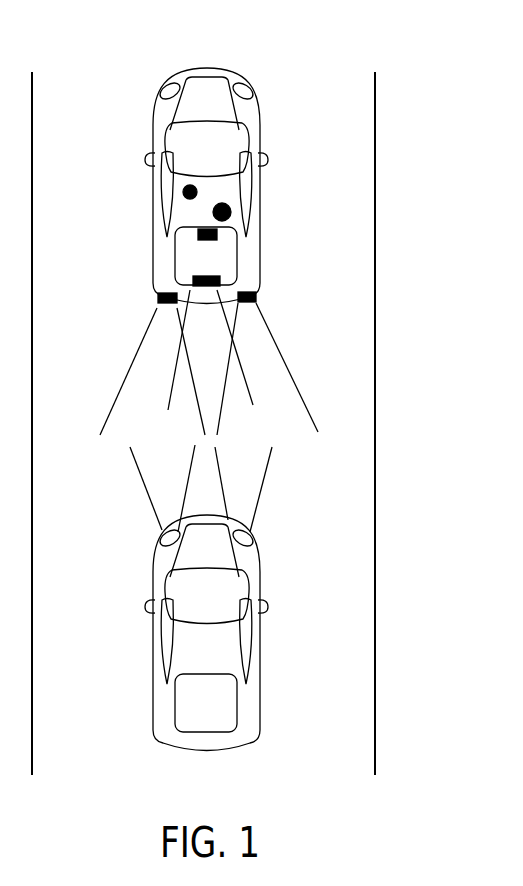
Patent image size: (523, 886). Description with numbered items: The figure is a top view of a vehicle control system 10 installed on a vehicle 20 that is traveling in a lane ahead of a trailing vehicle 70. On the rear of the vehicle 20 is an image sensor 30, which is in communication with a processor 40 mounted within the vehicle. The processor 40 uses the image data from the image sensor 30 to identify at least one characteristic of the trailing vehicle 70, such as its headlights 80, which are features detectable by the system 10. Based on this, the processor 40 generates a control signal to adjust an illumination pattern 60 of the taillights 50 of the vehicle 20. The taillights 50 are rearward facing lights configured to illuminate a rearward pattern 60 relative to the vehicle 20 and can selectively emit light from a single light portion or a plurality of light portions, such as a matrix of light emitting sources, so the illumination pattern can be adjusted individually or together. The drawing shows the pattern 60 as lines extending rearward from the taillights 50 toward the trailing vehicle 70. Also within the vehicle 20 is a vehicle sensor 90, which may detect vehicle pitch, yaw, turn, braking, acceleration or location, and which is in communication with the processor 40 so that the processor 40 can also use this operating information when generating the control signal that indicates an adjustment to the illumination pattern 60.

The vehicle control system 10 is at (424, 49).
The vehicle 20 is at (276, 117).
The image sensor 30 is at (213, 238).
The processor 40 is at (183, 192).
The taillight 50 is at (193, 280).
The illumination pattern 60 is at (281, 413).
The trailing vehicle 70 is at (263, 557).
The headlights 80 is at (169, 499).
The vehicle sensor 90 is at (231, 208).